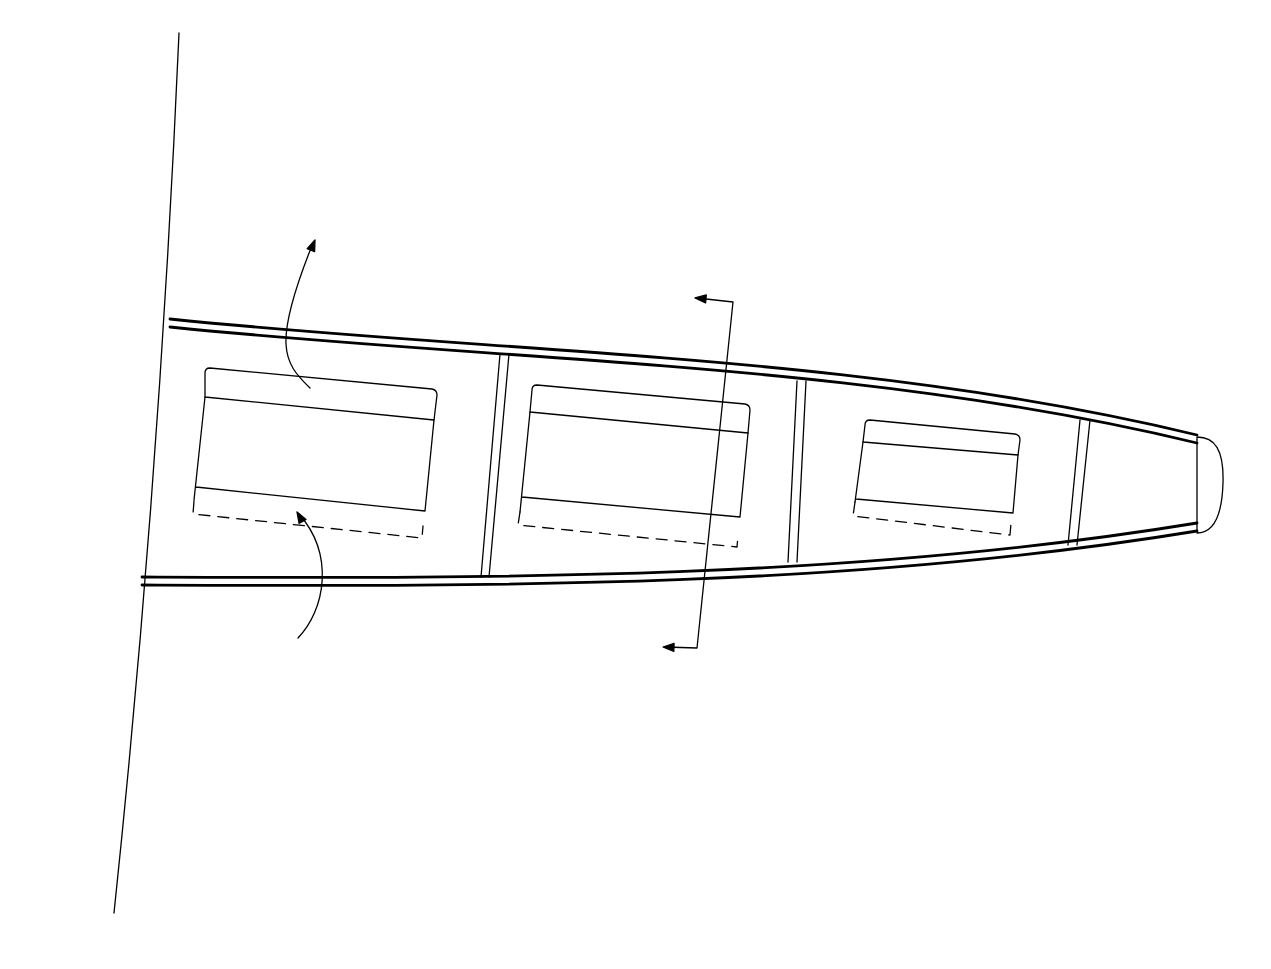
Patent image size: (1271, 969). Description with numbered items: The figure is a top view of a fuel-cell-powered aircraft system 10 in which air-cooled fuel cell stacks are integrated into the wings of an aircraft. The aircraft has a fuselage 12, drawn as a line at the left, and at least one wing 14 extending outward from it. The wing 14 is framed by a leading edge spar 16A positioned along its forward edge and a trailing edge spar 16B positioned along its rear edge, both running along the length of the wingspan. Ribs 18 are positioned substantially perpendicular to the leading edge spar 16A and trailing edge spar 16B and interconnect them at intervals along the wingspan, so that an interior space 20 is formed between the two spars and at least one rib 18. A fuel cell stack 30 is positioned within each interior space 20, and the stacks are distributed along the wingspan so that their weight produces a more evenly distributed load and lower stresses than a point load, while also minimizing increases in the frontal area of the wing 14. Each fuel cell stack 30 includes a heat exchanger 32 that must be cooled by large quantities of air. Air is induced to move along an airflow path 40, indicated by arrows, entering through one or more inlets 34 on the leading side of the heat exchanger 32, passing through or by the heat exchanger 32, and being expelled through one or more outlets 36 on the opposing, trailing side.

The fuel-cell-powered aircraft system 10 is at (962, 196).
The fuselage 12 is at (109, 447).
The wing 14 is at (1064, 289).
The leading edge spar 16A is at (582, 587).
The trailing edge spar 16B is at (553, 345).
The rib 18 is at (503, 383).
The interior space 20 is at (473, 472).
The fuel cell stack 30 is at (632, 512).
The heat exchanger 32 is at (318, 466).
The inlet 34 is at (374, 532).
The outlet 36 is at (393, 412).
The airflow path 40 is at (300, 277).